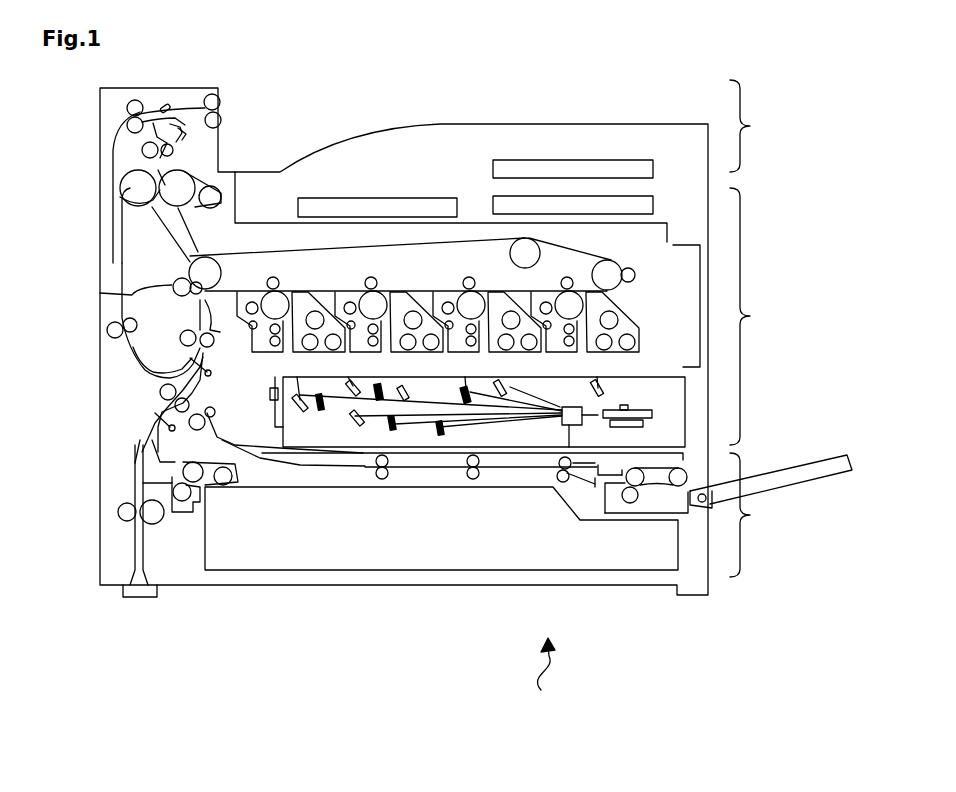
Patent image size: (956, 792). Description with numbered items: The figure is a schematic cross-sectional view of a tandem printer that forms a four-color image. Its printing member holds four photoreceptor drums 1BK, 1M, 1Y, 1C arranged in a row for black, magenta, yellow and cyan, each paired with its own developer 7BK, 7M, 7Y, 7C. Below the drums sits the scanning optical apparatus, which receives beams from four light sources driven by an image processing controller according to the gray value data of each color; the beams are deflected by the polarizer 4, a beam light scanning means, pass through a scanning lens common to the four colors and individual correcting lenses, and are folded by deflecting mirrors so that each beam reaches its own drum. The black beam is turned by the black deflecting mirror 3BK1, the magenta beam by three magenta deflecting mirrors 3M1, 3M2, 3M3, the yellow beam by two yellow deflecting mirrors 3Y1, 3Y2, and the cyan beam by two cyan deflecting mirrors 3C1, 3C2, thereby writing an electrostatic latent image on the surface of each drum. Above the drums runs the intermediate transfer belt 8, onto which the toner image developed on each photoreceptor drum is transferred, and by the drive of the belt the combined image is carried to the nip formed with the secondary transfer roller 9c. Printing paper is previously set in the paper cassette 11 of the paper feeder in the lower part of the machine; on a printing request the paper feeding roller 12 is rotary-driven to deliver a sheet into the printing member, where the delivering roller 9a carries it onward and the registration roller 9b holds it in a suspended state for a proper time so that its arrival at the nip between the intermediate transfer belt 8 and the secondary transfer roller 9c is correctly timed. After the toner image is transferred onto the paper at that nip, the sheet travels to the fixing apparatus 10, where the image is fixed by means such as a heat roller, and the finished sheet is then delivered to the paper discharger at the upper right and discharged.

The black photoreceptor drum 1BK is at (287, 297).
The magenta photoreceptor drum 1M is at (385, 297).
The yellow photoreceptor drum 1Y is at (483, 295).
The cyan photoreceptor drum 1C is at (582, 292).
The black developer 7BK is at (319, 307).
The magenta developer 7M is at (417, 307).
The yellow developer 7Y is at (515, 306).
The cyan developer 7C is at (626, 317).
The intermediate transfer belt 8 is at (423, 243).
The fixing apparatus 10 is at (150, 190).
The delivering roller 9a is at (162, 395).
The registration roller 9b is at (180, 340).
The secondary transfer roller 9c is at (100, 294).
The paper cassette 11 is at (276, 540).
The paper feeding roller 12 is at (223, 487).
The polarizer 4 is at (650, 411).
The black deflecting mirror 3BK1 is at (303, 412).
The magenta deflecting mirror 3M1 is at (398, 424).
The magenta deflecting mirror 3M2 is at (352, 424).
The magenta deflecting mirror 3M3 is at (380, 400).
The yellow deflecting mirror 3Y1 is at (500, 395).
The yellow deflecting mirror 3Y2 is at (403, 400).
The cyan deflecting mirror 3C1 is at (608, 412).
The cyan deflecting mirror 3C2 is at (465, 402).